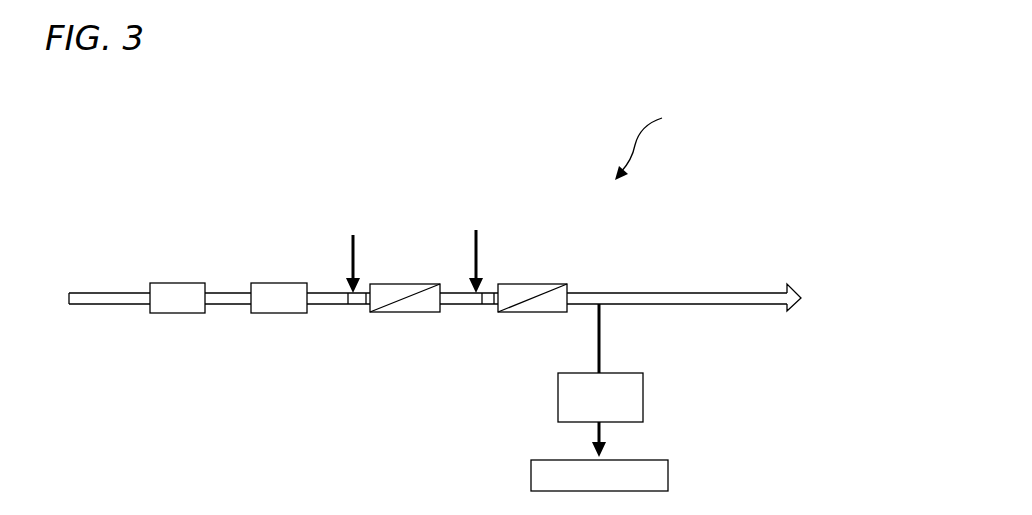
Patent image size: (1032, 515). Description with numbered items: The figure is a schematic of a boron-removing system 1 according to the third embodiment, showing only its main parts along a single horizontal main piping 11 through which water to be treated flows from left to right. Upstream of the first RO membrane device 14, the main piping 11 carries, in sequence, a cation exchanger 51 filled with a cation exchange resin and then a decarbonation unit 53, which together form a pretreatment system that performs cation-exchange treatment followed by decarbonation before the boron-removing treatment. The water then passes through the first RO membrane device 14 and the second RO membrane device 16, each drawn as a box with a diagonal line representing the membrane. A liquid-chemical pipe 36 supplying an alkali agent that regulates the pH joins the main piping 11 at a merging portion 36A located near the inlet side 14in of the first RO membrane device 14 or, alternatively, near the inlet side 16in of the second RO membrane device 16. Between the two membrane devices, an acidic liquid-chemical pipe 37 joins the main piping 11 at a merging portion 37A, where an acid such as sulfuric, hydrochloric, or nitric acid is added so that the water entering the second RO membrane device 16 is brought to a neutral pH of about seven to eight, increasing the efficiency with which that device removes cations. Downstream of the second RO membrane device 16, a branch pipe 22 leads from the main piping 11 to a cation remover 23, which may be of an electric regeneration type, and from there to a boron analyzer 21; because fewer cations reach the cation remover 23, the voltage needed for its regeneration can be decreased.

The boron-removing system 1 is at (663, 140).
The main piping 11 is at (645, 298).
The first RO membrane device 14 is at (405, 313).
The inlet side of the first RO membrane device 14in is at (370, 297).
The second RO membrane device 16 is at (540, 283).
The inlet side of the second RO membrane device 16in is at (478, 297).
The boron analyzer 21 is at (642, 478).
The branch pipe 22 is at (600, 332).
The cation remover 23 is at (628, 402).
The liquid-chemical pipe 36 is at (353, 232).
The merging portion of the liquid-chemical pipe 36A is at (348, 290).
The acidic liquid-chemical pipe 37 is at (477, 226).
The merging portion of the acidic liquid-chemical pipe 37A is at (482, 290).
The cation exchanger 51 is at (180, 313).
The decarbonation unit 53 is at (272, 313).